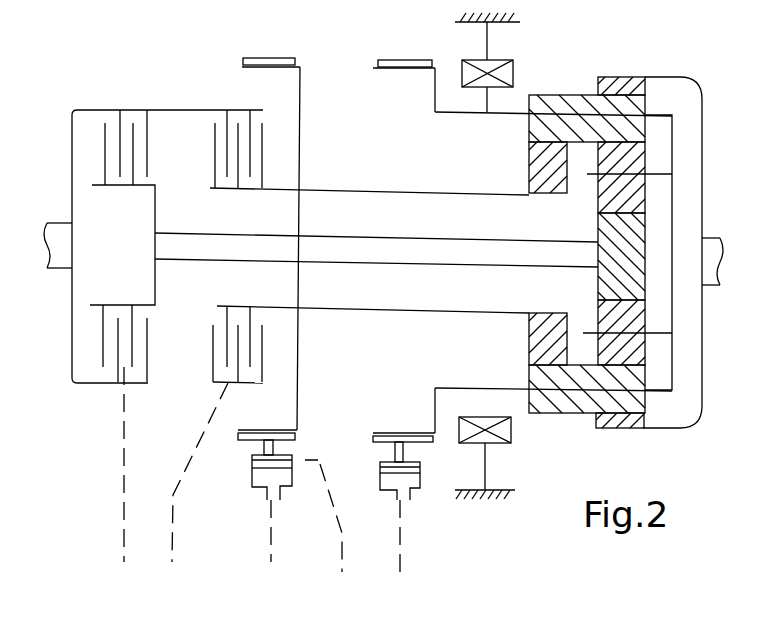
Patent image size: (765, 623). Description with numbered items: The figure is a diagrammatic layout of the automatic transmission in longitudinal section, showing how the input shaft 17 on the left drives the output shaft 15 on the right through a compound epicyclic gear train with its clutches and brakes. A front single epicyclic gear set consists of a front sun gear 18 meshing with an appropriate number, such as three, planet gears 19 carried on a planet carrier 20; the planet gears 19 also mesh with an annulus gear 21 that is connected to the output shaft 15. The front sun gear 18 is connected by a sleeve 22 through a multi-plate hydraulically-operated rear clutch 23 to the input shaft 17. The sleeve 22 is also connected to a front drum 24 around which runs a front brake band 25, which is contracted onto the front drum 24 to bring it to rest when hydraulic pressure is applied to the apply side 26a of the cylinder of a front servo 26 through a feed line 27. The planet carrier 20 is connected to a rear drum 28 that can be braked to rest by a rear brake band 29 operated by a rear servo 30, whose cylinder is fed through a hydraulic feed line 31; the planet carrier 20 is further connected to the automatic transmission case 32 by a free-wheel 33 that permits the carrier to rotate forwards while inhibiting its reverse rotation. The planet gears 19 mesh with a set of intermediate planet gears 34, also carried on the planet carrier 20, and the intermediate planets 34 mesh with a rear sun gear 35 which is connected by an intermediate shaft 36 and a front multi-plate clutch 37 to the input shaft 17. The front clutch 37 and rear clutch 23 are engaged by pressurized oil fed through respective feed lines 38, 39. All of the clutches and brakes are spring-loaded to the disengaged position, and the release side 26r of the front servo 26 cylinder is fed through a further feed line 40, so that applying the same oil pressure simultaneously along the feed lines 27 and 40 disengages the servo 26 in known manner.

The output shaft 15 is at (712, 238).
The input shaft 17 is at (62, 266).
The front sun gear 18 is at (533, 163).
The planet gears 19 is at (530, 131).
The planet carrier 20 is at (513, 111).
The annulus gear 21 is at (623, 77).
The sleeve 22 is at (383, 191).
The rear clutch 23 is at (219, 117).
The front drum 24 is at (302, 133).
The front brake band 25 is at (276, 57).
The front servo 26 is at (257, 476).
The release side 26r is at (256, 459).
The apply side 26a is at (258, 478).
The feed line 27 is at (270, 548).
The rear drum 28 is at (433, 89).
The rear brake band 29 is at (394, 58).
The rear servo 30 is at (410, 485).
The hydraulic feed line 31 is at (400, 556).
The automatic transmission case 32 is at (516, 18).
The free-wheel 33 is at (510, 435).
The intermediate planet gears 34 is at (638, 154).
The rear sun gear 35 is at (600, 277).
The intermediate shaft 36 is at (350, 243).
The front clutch 37 is at (145, 165).
The feed line 38 is at (124, 472).
The feed line 39 is at (172, 518).
The further feed line 40 is at (342, 549).